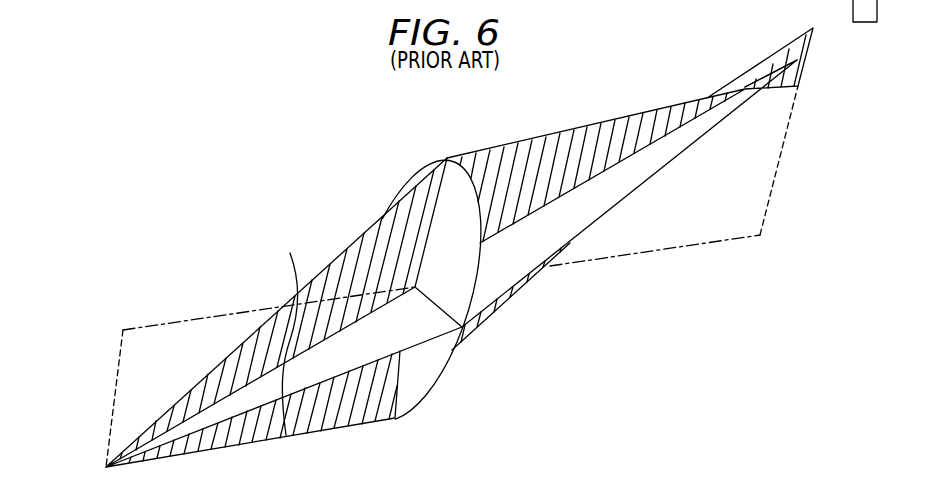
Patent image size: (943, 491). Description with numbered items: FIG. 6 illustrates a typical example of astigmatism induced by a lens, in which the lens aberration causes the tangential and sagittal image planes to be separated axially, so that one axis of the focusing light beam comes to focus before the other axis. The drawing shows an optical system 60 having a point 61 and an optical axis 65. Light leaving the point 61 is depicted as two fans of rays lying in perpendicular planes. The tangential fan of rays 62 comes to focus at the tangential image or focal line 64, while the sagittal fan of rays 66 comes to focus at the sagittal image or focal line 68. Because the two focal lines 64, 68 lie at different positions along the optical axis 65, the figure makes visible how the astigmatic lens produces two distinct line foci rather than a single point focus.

The optical system 60 is at (425, 397).
The point 61 is at (93, 465).
The tangential fan of rays 62 is at (327, 268).
The tangential image or focal line 64 is at (721, 72).
The optical axis 65 is at (207, 318).
The sagittal fan of rays 66 is at (327, 381).
The sagittal image or focal line 68 is at (778, 104).